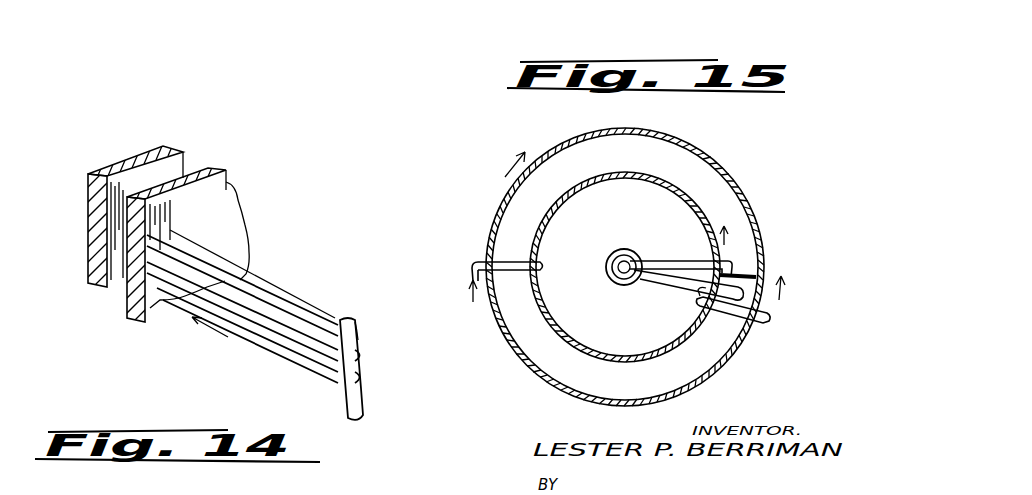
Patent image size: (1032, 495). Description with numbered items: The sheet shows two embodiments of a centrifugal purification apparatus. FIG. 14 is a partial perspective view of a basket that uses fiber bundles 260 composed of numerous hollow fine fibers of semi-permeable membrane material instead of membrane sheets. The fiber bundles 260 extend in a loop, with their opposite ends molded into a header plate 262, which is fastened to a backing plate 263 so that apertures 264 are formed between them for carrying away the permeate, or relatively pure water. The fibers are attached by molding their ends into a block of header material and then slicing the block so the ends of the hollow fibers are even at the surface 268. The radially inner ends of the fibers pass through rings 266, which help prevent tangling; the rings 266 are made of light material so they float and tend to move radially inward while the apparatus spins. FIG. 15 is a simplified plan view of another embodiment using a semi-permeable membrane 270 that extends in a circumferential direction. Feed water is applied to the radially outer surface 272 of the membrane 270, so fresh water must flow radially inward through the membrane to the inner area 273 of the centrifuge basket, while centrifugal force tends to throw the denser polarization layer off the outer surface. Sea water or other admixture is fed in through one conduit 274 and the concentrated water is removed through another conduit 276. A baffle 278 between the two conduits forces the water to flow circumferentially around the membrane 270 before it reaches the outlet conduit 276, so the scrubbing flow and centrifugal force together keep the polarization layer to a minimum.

In FIG. 14, the fiber bundles 260 is at (285, 300).
In FIG. 14, the header plate 262 is at (218, 195).
In FIG. 14, the backing plate 263 is at (100, 175).
In FIG. 14, the apertures 264 is at (147, 173).
In FIG. 14, the rings 266 is at (364, 298).
In FIG. 14, the surface 268 is at (123, 217).
In FIG. 15, the semi-permeable membrane 270 is at (670, 182).
In FIG. 15, the radially outer surface of the membrane 272 is at (692, 200).
In FIG. 15, the inner area 273 is at (634, 229).
In FIG. 15, the conduit 274 is at (678, 252).
In FIG. 15, the conduit 276 is at (687, 281).
In FIG. 15, the baffle 278 is at (743, 273).